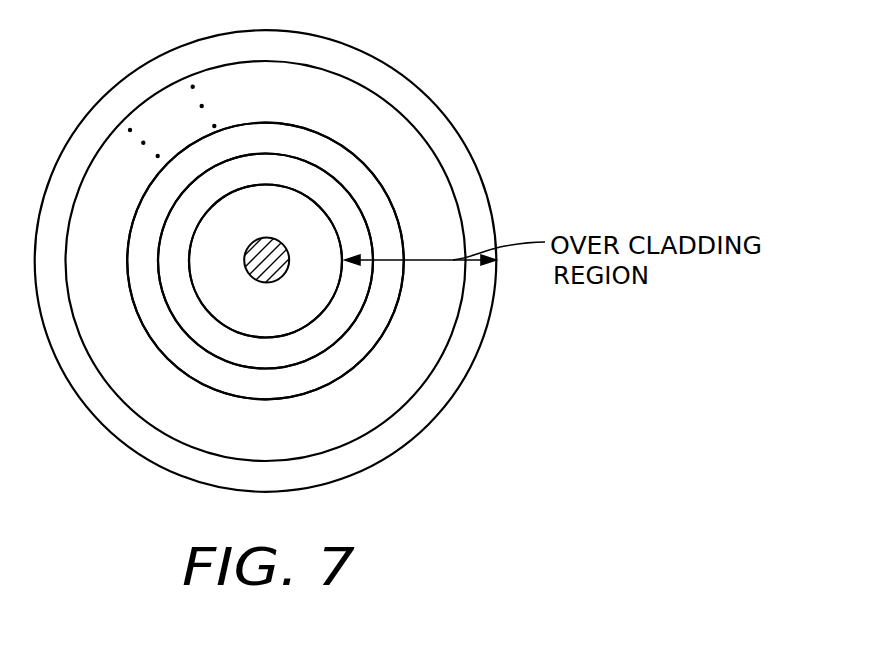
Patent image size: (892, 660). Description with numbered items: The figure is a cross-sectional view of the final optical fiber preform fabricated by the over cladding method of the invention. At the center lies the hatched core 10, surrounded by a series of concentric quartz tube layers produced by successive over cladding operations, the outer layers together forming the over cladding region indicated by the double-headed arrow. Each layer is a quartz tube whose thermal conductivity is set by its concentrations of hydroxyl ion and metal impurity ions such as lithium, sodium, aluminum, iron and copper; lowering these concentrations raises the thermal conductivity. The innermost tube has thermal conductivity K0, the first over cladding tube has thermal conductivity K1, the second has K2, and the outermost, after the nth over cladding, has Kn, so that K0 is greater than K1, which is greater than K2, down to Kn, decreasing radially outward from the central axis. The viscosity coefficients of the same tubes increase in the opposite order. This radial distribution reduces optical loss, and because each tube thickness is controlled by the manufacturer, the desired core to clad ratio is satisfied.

The core 10 is at (277, 278).
The thermal conductivity of first tube K0 is at (265, 261).
The thermal conductivity of first over cladding tube K1 is at (265, 261).
The thermal conductivity of second over cladding tube K2 is at (265, 261).
The thermal conductivity of nth over cladding tube Kn is at (266, 261).